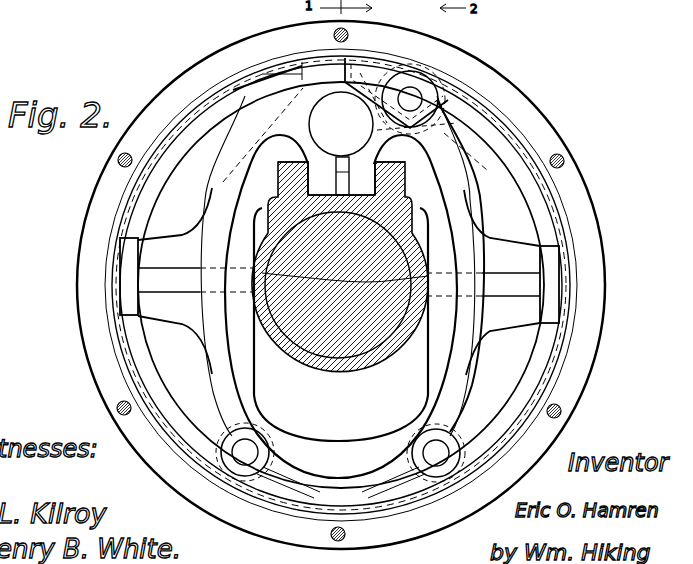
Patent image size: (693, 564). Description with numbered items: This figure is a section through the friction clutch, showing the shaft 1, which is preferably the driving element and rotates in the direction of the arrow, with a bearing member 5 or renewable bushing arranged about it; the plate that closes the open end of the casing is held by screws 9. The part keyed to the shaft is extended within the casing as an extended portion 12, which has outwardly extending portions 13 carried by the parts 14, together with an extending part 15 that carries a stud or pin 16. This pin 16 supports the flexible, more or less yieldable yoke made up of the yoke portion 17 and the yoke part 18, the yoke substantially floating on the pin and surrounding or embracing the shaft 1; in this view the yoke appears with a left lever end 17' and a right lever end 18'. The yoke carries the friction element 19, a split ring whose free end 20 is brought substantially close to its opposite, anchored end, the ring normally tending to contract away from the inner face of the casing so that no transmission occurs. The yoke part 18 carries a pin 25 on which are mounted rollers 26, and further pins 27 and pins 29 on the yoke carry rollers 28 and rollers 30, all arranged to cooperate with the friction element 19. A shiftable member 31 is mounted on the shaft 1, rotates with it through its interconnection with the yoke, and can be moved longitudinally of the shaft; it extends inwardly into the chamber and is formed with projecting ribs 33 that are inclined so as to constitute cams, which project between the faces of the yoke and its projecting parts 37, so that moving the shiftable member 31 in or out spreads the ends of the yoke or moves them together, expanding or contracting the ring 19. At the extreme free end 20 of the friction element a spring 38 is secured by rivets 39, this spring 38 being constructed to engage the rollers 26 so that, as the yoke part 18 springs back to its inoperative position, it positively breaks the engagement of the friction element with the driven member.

The shaft 1 is at (350, 368).
The bearing member 5 is at (218, 82).
The screws 9 is at (117, 405).
The extended portion 12 is at (345, 422).
The outwardly extending portions 13 is at (122, 285).
The parts 14 is at (167, 236).
The extending part 15 is at (344, 165).
The stud or pin 16 is at (328, 117).
The yoke portion 17 is at (245, 249).
The left lever end 17' is at (278, 386).
The yoke part 18 is at (466, 266).
The right lever end 18' is at (401, 376).
The friction element 19 is at (110, 351).
The free end 20 is at (462, 70).
The pin 25 is at (412, 93).
The rollers 26 is at (405, 74).
The pins 27 is at (433, 452).
The rollers 28 is at (452, 438).
The pins 29 is at (250, 448).
The rollers 30 is at (232, 434).
The shiftable member 31 is at (268, 355).
The projecting ribs 33 is at (286, 166).
The projecting parts 37 is at (356, 181).
The spring 38 is at (372, 63).
The rivets 39 is at (370, 52).